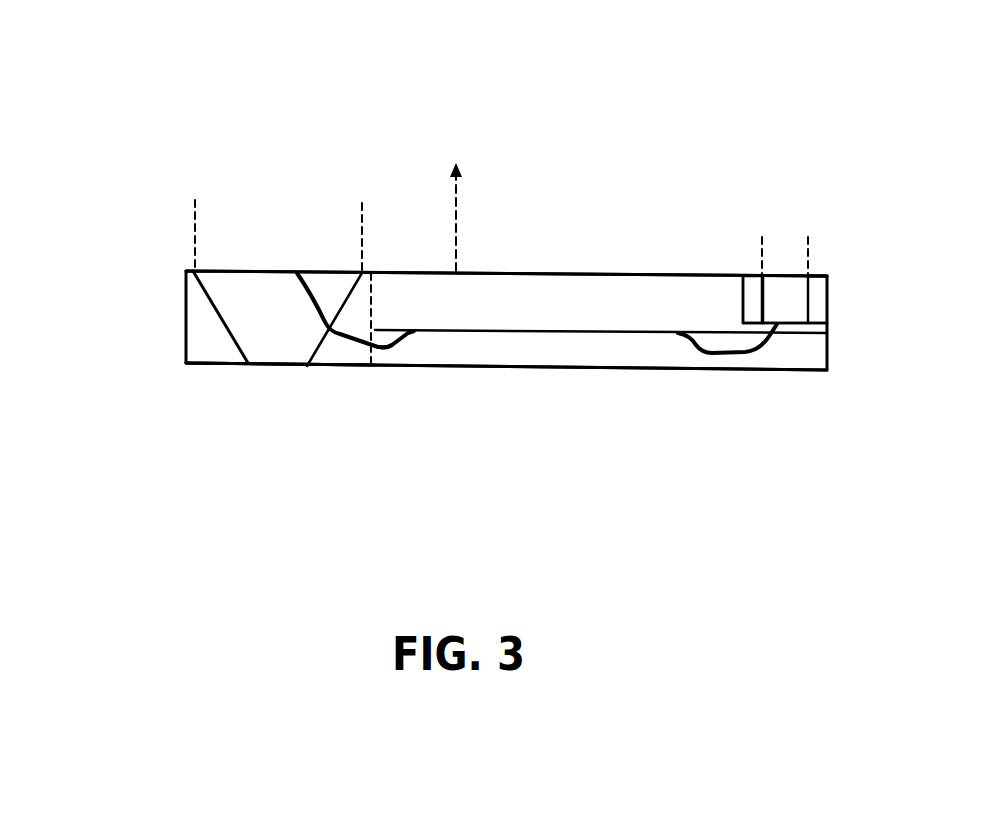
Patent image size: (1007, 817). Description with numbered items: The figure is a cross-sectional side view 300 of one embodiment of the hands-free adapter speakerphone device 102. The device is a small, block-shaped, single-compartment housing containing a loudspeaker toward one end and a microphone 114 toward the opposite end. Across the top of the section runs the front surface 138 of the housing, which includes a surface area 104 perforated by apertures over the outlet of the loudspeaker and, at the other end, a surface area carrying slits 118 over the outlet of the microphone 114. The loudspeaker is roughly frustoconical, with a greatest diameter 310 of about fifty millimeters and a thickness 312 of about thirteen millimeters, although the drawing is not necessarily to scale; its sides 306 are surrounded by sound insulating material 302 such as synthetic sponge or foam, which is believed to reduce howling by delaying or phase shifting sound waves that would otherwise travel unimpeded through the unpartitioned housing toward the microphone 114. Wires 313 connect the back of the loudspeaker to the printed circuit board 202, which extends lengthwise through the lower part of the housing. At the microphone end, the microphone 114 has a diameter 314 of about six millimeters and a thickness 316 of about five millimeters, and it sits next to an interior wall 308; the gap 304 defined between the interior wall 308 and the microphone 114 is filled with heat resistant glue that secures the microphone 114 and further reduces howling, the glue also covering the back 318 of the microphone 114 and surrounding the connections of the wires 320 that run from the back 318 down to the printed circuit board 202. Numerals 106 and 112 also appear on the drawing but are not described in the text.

The cross-sectional side view 300 is at (200, 43).
The speakerphone device 102 is at (137, 227).
The surface area 104 is at (337, 271).
The substrate 106 is at (274, 377).
The light emission direction 112 is at (458, 217).
The microphone 114 is at (790, 397).
The slits 118 is at (782, 272).
The front surface 138 is at (539, 266).
The printed circuit board 202 is at (516, 341).
The sound insulating material 302 is at (215, 348).
The gap 304 is at (818, 283).
The sides of the loudspeaker 306 is at (348, 298).
The interior wall 308 is at (743, 302).
The greatest diameter 310 is at (195, 214).
The thickness 312 is at (158, 272).
The wires 313 is at (407, 347).
The diameter 314 is at (809, 222).
The thickness 316 is at (838, 276).
The back of the microphone 318 is at (795, 327).
The wires 320 is at (732, 353).